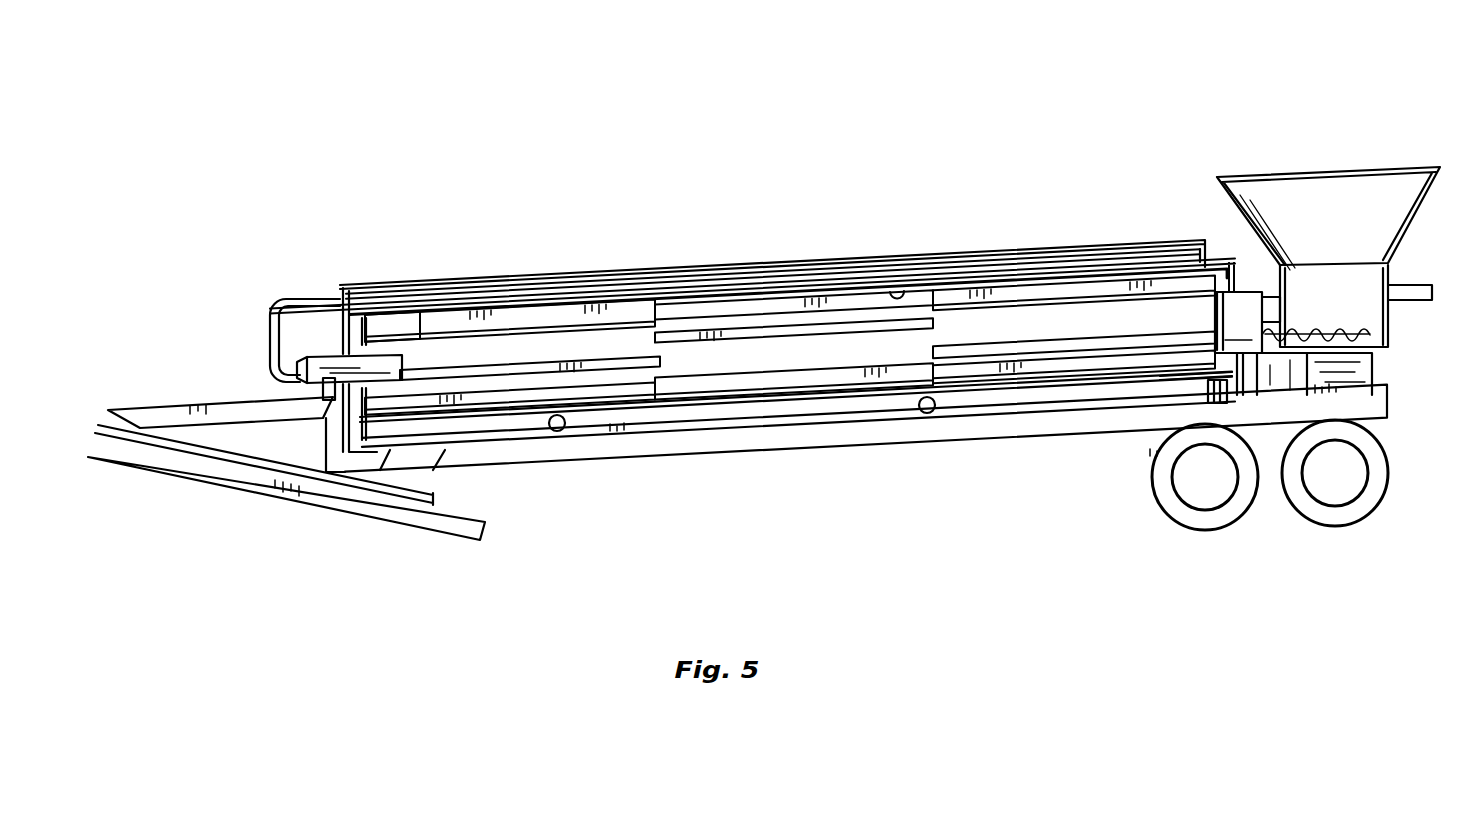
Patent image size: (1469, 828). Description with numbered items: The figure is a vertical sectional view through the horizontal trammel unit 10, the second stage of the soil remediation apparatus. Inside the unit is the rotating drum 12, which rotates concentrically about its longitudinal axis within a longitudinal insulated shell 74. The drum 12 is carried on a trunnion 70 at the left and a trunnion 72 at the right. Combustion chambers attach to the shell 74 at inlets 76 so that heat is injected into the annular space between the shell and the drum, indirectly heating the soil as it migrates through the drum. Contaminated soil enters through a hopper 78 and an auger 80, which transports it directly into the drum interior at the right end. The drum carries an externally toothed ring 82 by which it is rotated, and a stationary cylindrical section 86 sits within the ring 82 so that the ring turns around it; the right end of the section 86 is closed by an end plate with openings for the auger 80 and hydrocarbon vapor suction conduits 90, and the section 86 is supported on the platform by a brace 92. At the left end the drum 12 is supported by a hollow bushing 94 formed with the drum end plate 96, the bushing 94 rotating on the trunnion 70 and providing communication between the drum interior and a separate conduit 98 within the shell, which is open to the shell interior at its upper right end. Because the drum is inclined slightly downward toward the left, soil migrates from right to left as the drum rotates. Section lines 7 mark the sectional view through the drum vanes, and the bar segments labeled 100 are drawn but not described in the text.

The section line 7- 7 is at (778, 248).
The horizontal trammel unit 10 is at (698, 226).
The rotating drum 12 is at (900, 290).
The trunnion 70 is at (323, 392).
The trunnion 72 is at (1208, 392).
The insulated shell 74 is at (497, 284).
The inlet 76 is at (577, 437).
The hopper 78 is at (1367, 197).
The auger 80 is at (1366, 354).
The externally toothed ring 82 is at (1243, 290).
The stationary cylindrical section 86 is at (1233, 317).
The hydrocarbon vapor suction conduit 90 is at (1417, 287).
The brace 92 is at (1253, 385).
The hollow bushing 94 is at (325, 362).
The end plate 96 is at (372, 322).
The conduit 98 is at (270, 298).
The conveyor sections 100 is at (549, 316).